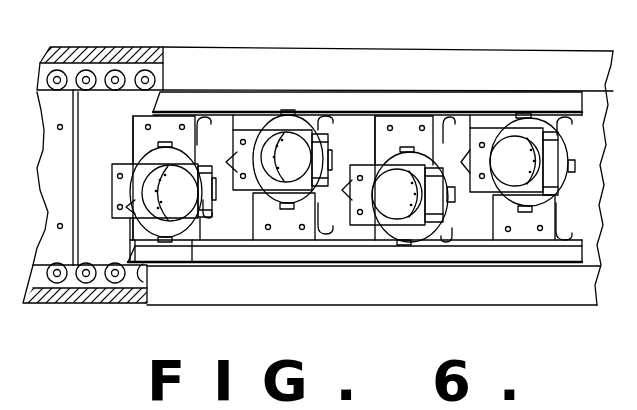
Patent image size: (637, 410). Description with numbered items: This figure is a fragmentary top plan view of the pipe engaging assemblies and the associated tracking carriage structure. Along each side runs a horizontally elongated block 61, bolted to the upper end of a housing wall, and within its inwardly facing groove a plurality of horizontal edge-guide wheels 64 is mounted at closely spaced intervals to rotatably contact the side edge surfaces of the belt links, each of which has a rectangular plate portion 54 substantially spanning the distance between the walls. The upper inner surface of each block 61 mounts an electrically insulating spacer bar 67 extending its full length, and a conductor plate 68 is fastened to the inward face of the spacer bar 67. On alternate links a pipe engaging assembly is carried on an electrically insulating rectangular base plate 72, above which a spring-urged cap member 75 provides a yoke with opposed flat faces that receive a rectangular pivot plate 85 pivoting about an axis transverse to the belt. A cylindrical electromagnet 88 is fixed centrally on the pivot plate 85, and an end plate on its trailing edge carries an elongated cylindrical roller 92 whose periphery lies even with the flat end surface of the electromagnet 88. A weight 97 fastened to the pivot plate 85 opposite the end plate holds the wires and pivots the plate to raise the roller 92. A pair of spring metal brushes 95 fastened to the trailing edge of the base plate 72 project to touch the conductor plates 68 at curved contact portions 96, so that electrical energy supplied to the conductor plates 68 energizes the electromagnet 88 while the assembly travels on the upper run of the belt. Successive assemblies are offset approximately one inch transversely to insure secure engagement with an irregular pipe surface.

The horizontally elongated block 61 is at (95, 50).
The horizontal edge-guide wheel 64 is at (96, 78).
The spacer bar 67 is at (360, 102).
The conductor plate 68 is at (563, 110).
The rectangular plate portion 54 is at (119, 161).
The rectangular base plate 72 is at (293, 237).
The cap member 75 is at (296, 117).
The rectangular pivot plate 85 is at (192, 250).
The cylindrical electromagnet 88 is at (131, 240).
The elongated cylindrical roller 92 is at (213, 203).
The spring metal brush 95 is at (213, 128).
The curved contact portion 96 is at (212, 236).
The weight 97 is at (112, 206).